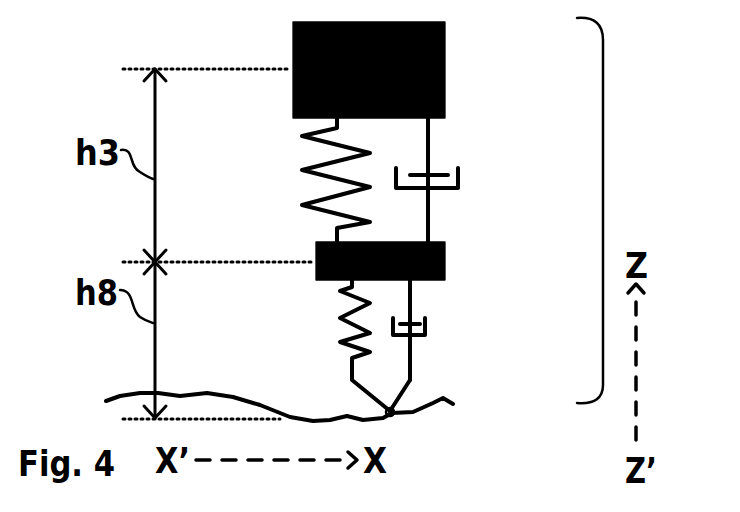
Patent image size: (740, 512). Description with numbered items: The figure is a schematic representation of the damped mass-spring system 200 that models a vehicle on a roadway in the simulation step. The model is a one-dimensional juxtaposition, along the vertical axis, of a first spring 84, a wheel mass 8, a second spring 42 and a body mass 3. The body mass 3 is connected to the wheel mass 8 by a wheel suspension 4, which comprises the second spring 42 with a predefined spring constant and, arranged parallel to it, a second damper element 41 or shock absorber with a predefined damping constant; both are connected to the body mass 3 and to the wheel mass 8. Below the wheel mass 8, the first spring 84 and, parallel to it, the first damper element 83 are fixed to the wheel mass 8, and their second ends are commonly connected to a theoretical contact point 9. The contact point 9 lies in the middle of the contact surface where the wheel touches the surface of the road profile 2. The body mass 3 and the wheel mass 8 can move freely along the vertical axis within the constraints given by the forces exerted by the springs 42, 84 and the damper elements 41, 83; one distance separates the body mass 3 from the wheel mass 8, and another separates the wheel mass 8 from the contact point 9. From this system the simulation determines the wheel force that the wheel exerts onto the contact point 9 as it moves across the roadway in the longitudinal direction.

The road profile 2 is at (150, 392).
The body mass 3 is at (448, 81).
The wheel suspension 4 is at (221, 223).
The wheel mass 8 is at (448, 262).
The contact point 9 is at (392, 420).
The second damper element 41 is at (462, 182).
The second spring 42 is at (313, 189).
The first damper element 83 is at (428, 328).
The first spring 84 is at (331, 335).
The damped mass-spring system 200 is at (603, 211).